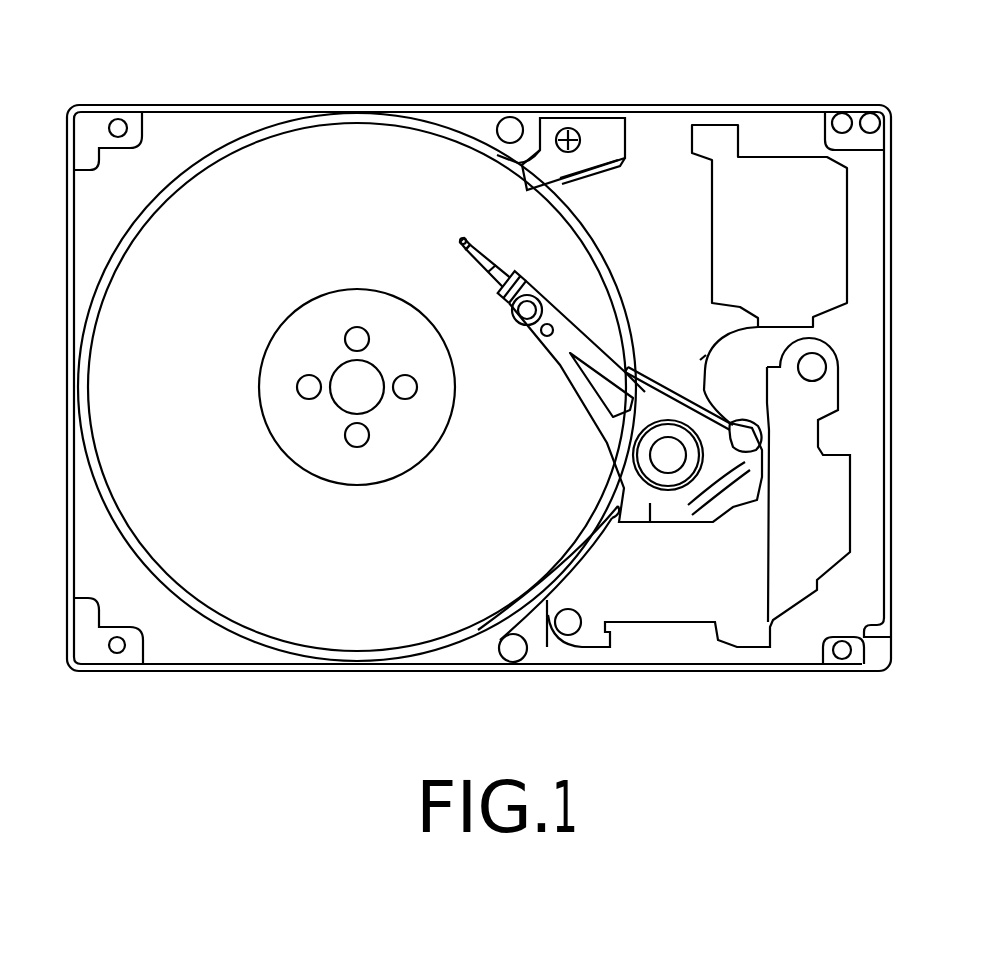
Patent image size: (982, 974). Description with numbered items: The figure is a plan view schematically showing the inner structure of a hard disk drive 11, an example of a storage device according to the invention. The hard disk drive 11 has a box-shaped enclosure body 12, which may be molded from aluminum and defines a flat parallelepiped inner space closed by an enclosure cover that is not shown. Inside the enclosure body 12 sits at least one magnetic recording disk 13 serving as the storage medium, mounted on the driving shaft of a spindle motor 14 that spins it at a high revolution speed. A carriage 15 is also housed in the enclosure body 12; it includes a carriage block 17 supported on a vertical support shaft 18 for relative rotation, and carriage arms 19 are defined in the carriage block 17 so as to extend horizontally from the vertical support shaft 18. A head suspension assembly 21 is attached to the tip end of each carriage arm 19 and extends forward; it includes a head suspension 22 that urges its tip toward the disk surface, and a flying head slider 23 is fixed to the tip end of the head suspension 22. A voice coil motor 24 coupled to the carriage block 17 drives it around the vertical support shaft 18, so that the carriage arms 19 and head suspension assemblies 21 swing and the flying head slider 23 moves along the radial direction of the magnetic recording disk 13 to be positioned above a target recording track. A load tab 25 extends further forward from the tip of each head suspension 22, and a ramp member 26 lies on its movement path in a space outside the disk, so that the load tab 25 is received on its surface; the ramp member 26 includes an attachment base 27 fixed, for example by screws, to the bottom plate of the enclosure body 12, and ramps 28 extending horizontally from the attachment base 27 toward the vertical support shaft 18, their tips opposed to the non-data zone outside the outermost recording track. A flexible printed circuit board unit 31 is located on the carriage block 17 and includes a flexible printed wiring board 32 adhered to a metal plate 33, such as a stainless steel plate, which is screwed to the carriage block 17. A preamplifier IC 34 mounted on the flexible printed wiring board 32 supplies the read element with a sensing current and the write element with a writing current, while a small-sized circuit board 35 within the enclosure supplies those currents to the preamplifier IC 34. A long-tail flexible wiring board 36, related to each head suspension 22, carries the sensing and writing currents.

The hard disk drive 11 is at (755, 103).
The enclosure body 12 is at (212, 105).
The magnetic recording disk 13 is at (363, 125).
The spindle motor 14 is at (375, 408).
The carriage 15 is at (605, 447).
The carriage block 17 is at (650, 505).
The vertical support shaft 18 is at (667, 491).
The carriage arm 19 is at (540, 338).
The head suspension assembly 21 is at (531, 287).
The head suspension 22 is at (485, 262).
The flying head slider 23 is at (462, 247).
The voice coil motor 24 is at (657, 625).
The load tab 25 is at (465, 240).
The ramp member 26 is at (608, 122).
The attachment base 27 is at (573, 120).
The ramp 28 is at (612, 166).
The flexible printed circuit board unit 31 is at (662, 384).
The flexible printed wiring board 32 is at (706, 355).
The metal plate 33 is at (767, 449).
The preamplifier IC 34 is at (700, 360).
The small-sized circuit board 35 is at (712, 230).
The flexible wiring board 36 is at (620, 368).